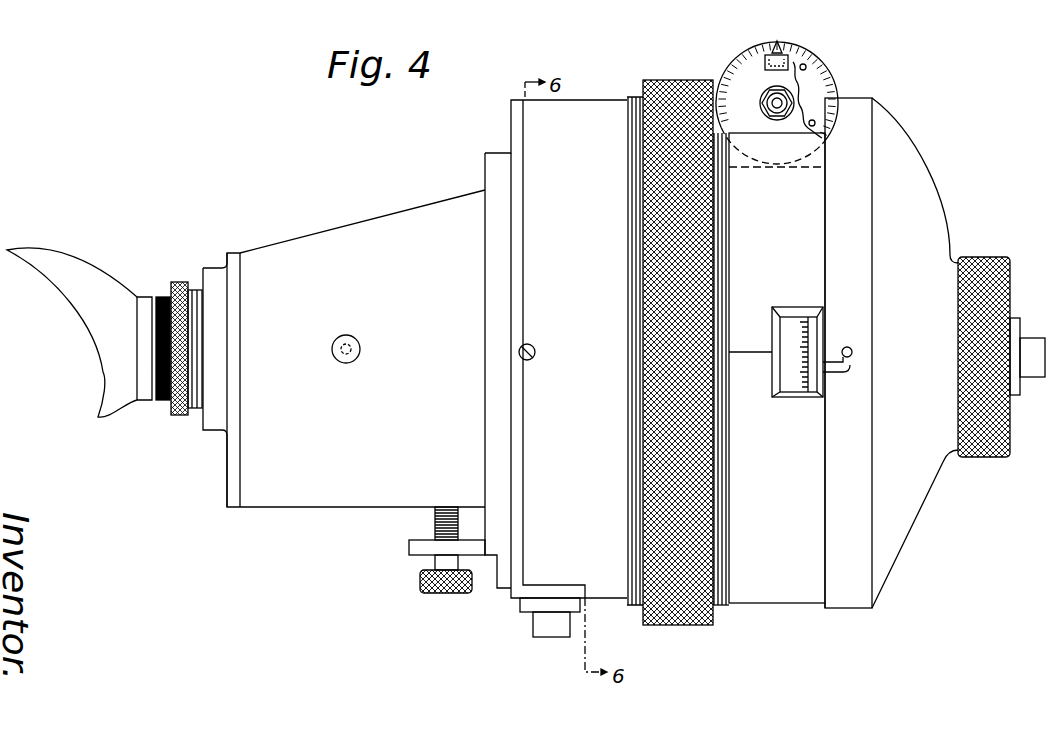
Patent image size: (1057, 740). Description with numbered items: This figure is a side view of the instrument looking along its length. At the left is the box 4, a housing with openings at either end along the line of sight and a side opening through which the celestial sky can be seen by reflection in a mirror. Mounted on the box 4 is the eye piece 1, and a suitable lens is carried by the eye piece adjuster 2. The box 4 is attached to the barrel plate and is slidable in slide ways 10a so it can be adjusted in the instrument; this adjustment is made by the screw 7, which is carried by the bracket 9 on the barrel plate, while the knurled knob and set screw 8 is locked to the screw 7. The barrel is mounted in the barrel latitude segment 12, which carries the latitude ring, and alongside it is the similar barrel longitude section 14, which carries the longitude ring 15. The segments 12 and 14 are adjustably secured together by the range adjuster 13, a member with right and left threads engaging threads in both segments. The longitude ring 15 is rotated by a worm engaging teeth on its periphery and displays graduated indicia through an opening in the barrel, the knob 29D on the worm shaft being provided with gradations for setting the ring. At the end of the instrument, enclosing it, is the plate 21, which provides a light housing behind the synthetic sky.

The eye piece 1 is at (118, 418).
The eye piece adjuster 2 is at (170, 415).
The box 4 is at (318, 497).
The screw 7 is at (435, 519).
The knurled knob and set screw 8 is at (421, 590).
The bracket 9 is at (409, 549).
The slide ways 10a is at (536, 349).
The barrel latitude segment 12 is at (612, 596).
The range adjuster 13 is at (680, 626).
The barrel longitude section 14 is at (774, 602).
The longitude ring 15 is at (800, 396).
The plate 21 is at (903, 558).
The dial 29D is at (808, 74).